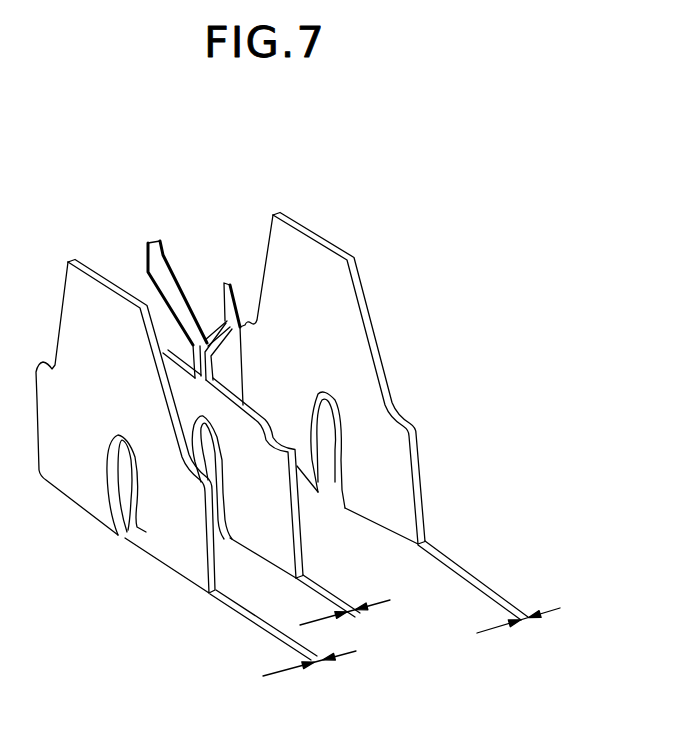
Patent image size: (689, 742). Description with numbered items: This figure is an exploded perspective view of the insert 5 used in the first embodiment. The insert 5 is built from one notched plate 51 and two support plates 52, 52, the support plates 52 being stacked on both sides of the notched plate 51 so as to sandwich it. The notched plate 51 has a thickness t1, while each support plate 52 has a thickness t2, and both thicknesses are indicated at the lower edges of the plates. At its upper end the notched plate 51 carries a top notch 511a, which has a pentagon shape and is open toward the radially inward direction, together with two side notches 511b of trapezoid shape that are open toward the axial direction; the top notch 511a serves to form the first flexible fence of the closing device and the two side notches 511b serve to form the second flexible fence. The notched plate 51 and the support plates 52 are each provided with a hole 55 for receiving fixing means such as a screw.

The insert 5 is at (207, 165).
The notched plate 51 is at (151, 240).
The top notch 511a is at (192, 297).
The side notches 511b is at (162, 318).
The support plates 52 is at (340, 258).
The hole 55 is at (127, 467).
The thickness of the notched plate t1 is at (339, 612).
The thickness of the support plates t2 is at (401, 642).